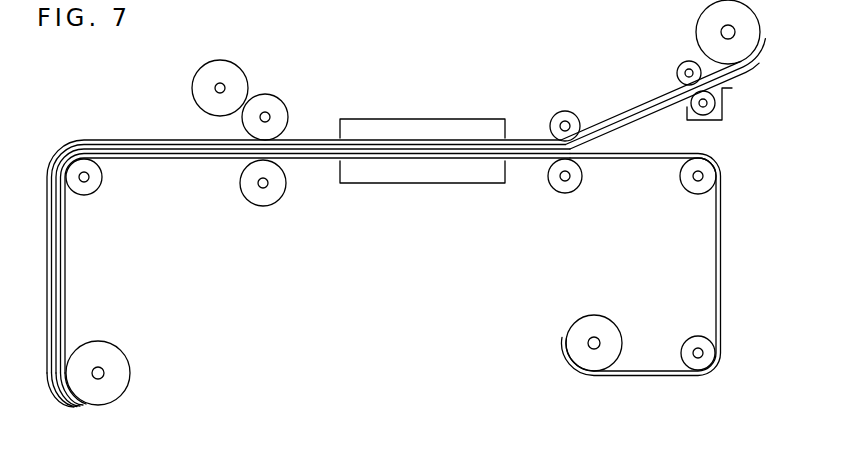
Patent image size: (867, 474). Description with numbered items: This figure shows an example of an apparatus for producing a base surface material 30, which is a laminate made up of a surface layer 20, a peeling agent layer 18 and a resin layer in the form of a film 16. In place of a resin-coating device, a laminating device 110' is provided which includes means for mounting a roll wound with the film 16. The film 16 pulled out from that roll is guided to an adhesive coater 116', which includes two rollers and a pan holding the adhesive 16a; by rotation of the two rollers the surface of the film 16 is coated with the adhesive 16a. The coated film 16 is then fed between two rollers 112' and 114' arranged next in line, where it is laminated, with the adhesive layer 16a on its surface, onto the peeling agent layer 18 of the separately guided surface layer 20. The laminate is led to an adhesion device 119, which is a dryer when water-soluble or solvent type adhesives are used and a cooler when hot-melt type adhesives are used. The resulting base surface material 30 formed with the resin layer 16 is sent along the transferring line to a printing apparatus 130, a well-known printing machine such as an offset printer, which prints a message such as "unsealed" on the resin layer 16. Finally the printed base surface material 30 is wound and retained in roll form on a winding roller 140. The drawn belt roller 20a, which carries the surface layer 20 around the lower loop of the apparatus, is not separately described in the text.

The resin layer (film) 16 is at (617, 118).
The adhesive 16a is at (628, 126).
The peeling agent layer 18 is at (646, 380).
The surface layer 20 is at (651, 368).
The belt roller 20a is at (597, 325).
The base surface material 30 is at (314, 139).
The laminating device 110' is at (693, 32).
The roller 112' is at (533, 106).
The roller 114' is at (573, 203).
The adhesive coater 116' is at (726, 115).
The adhesion device 119 is at (418, 185).
The printing apparatus 130 is at (255, 85).
The winding roller 140 is at (104, 368).